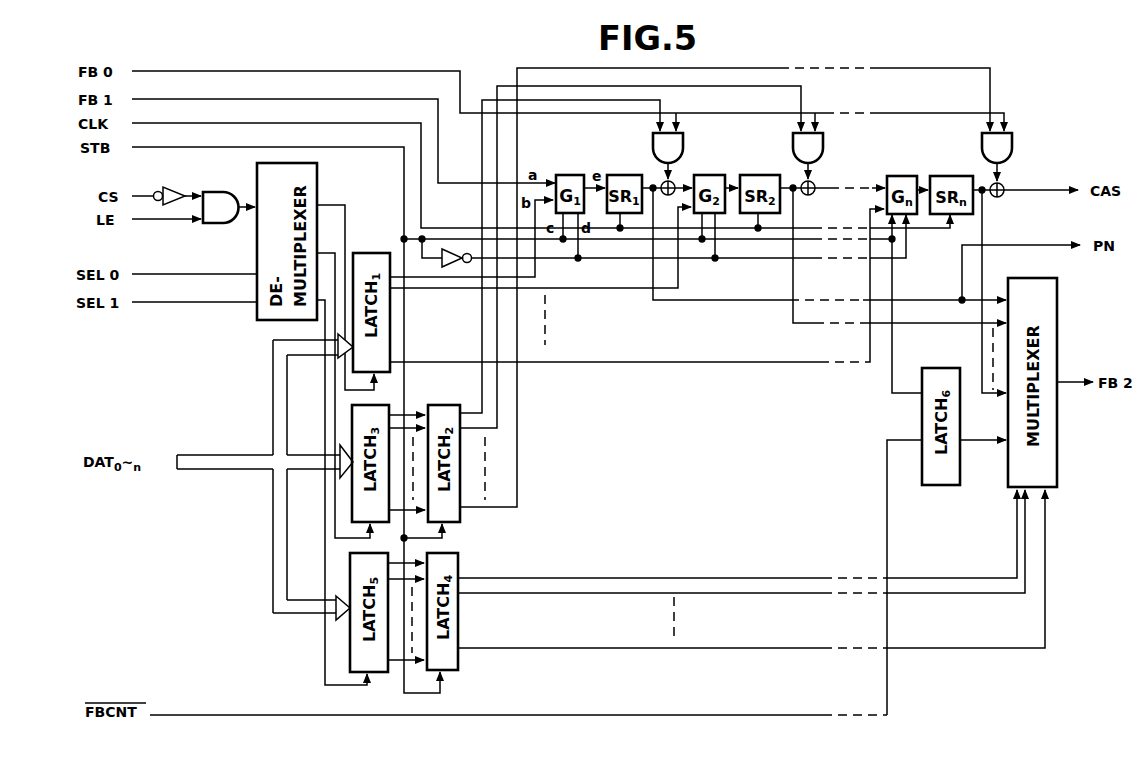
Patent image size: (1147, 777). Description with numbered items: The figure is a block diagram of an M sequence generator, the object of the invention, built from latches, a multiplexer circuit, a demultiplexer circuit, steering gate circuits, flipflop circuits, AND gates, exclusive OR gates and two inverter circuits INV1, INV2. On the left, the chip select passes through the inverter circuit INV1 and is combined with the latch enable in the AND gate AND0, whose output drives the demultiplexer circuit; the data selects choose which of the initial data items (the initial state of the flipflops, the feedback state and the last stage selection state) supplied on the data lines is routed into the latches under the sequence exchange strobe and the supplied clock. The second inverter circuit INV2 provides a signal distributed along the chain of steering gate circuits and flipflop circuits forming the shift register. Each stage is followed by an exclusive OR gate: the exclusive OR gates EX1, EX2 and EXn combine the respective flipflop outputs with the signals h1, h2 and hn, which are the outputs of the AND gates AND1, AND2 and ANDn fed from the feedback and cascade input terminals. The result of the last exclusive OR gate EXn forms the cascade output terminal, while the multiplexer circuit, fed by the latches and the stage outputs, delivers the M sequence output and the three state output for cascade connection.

The inverter circuit INV1 is at (175, 189).
The AND gate AND0 is at (214, 224).
The inverter circuit INV2 is at (449, 284).
The AND gate AND1 is at (683, 139).
The AND gate AND2 is at (823, 139).
The AND gate ANDn is at (1012, 140).
The exclusive OR gate EX1 is at (660, 182).
The exclusive OR gate EX2 is at (800, 182).
The exclusive OR gate EXn is at (989, 184).
The AND gate output signal h1 is at (672, 172).
The AND gate output signal h2 is at (812, 172).
The AND gate output signal hn is at (1001, 172).